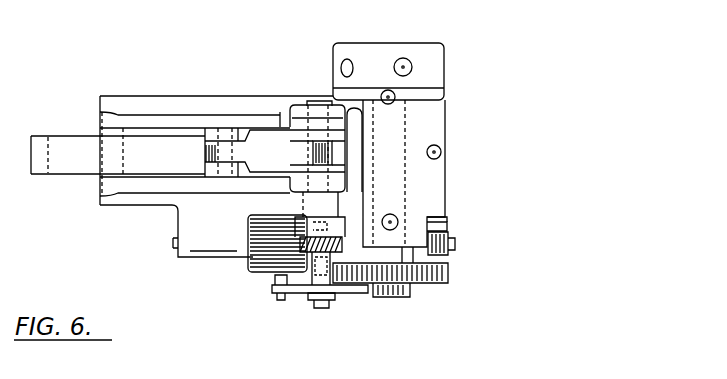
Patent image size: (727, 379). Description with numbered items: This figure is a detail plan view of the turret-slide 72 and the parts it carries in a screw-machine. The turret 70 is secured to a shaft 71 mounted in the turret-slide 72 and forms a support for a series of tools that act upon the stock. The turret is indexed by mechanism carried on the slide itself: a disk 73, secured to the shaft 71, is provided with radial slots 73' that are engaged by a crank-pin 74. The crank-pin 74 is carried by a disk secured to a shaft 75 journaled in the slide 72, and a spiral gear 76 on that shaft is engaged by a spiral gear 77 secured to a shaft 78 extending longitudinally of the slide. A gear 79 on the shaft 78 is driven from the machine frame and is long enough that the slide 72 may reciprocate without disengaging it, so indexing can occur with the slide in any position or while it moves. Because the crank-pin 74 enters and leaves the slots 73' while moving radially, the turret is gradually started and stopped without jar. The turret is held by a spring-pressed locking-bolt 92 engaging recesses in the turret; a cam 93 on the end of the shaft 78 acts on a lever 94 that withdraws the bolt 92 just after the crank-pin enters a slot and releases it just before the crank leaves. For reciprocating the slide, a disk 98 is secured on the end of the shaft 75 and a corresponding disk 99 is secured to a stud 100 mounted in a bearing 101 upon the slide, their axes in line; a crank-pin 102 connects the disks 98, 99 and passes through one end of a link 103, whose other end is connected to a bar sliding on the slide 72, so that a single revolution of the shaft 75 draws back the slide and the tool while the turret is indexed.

The turret 70 is at (390, 50).
The shaft 71 is at (398, 134).
The turret-slide 72 is at (176, 103).
The disk 73 is at (406, 265).
The radial slots 73' is at (413, 298).
The crank-pin 74 is at (277, 279).
The shaft 75 is at (303, 207).
The spiral gear 76 is at (320, 234).
The spiral gear 77 is at (318, 228).
The shaft 78 is at (181, 241).
The gear 79 is at (250, 265).
The spring-pressed locking-bolt 92 is at (437, 220).
The cam 93 is at (449, 258).
The lever 94 is at (448, 226).
The disk 98 is at (340, 172).
The disk 99 is at (340, 135).
The stud 100 is at (321, 101).
The bearing 101 is at (300, 108).
The crank-pin 102 is at (305, 150).
The link 103 is at (257, 158).